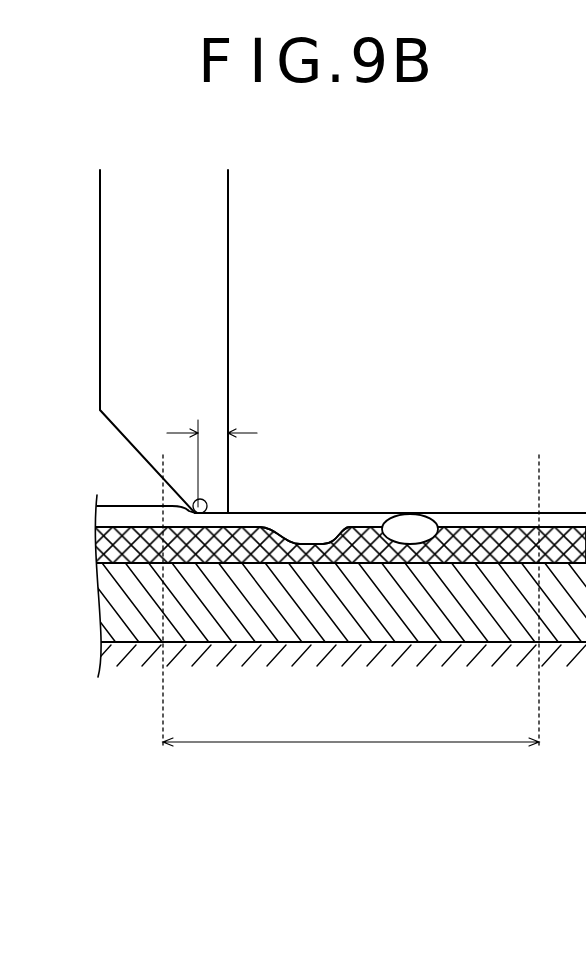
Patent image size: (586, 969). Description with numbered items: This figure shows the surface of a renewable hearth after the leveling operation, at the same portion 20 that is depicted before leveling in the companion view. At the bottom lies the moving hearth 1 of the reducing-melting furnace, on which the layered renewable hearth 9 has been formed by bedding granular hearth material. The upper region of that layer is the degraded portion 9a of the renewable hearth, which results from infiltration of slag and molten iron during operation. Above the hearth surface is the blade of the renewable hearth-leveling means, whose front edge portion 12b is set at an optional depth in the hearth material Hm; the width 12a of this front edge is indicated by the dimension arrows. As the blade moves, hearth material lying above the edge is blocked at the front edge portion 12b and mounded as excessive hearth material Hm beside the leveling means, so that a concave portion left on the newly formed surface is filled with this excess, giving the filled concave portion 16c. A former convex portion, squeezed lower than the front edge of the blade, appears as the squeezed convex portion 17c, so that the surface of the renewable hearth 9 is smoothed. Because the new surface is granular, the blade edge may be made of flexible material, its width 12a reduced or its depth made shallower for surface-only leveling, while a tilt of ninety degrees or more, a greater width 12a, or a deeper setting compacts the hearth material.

The moving hearth 1 is at (124, 653).
The renewable hearth 9 is at (130, 607).
The degraded portion of renewable hearth 9a is at (117, 547).
The width of the front edge portion of the blade 12a is at (210, 432).
The front edge portion of the blade 12b is at (117, 424).
The filled concave portion 16c is at (313, 522).
The particle 17c is at (410, 524).
The same portion of the renewable hearth 20 is at (351, 601).
The hearth material Hm is at (132, 515).